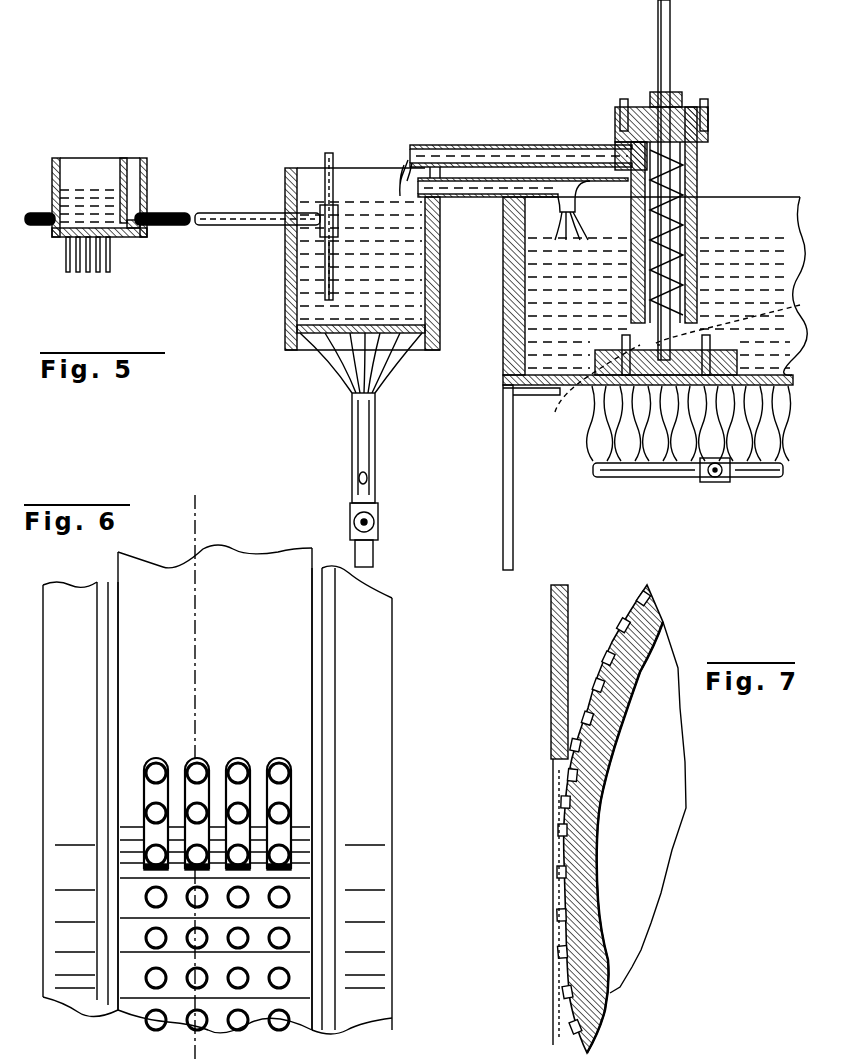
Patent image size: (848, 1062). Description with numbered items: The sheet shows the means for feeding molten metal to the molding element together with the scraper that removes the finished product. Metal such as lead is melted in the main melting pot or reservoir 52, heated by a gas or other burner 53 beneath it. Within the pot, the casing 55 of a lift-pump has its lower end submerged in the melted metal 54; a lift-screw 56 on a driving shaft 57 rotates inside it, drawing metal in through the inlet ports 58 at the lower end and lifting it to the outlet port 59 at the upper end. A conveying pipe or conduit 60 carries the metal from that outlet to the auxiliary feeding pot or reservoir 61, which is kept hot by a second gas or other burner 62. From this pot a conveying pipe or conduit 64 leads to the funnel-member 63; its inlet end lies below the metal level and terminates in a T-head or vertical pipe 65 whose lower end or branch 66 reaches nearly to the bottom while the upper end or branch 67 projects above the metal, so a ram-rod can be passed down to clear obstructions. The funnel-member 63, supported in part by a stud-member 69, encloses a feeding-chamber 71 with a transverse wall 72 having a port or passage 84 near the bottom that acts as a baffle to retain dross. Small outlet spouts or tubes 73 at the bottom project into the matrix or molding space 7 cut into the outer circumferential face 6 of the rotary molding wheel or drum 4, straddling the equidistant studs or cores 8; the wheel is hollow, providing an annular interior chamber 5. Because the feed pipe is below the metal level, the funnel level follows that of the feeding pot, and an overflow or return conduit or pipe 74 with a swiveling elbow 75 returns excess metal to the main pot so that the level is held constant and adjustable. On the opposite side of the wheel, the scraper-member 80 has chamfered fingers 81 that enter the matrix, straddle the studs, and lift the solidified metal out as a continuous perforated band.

In FIG. 6, the rotary molding wheel or drum 4 is at (392, 750).
In FIG. 7, the rotary molding wheel or drum 4 is at (645, 632).
In FIG. 7, the annular interior chamber 5 is at (627, 860).
In FIG. 6, the outer circumferential face 6 is at (58, 690).
In FIG. 7, the outer circumferential face 6 is at (553, 878).
In FIG. 6, the matrix or molding space 7 is at (420, 950).
In FIG. 7, the matrix or molding space 7 is at (606, 672).
In FIG. 6, the studs or cores 8 is at (272, 762).
In FIG. 7, the studs or cores 8 is at (558, 814).
In FIG. 6, the scraper-member 80 is at (215, 789).
In FIG. 7, the scraper-member 80 is at (552, 680).
In FIG. 6, the chamfered fingers 81 is at (240, 870).
In FIG. 7, the chamfered fingers 81 is at (558, 838).
In FIG. 5, the main melting pot or reservoir 52 is at (742, 207).
In FIG. 5, the gas or other burner 53 is at (668, 478).
In FIG. 5, the melted metal 54 is at (755, 248).
In FIG. 5, the pump-casing 55 is at (695, 172).
In FIG. 5, the lift-screw 56 is at (697, 228).
In FIG. 5, the driving shaft 57 is at (670, 55).
In FIG. 5, the inlet ports 58 is at (657, 437).
In FIG. 5, the outlet port 59 is at (617, 128).
In FIG. 5, the conveying pipe or conduit 60 is at (505, 145).
In FIG. 5, the auxiliary feeding pot or reservoir 61 is at (318, 345).
In FIG. 5, the gas or other burner 62 is at (378, 440).
In FIG. 5, the funnel-member 63 is at (55, 157).
In FIG. 5, the conveying pipe or conduit 64 is at (238, 212).
In FIG. 5, the T-head or vertical pipe 65 is at (338, 215).
In FIG. 5, the lower end or branch 66 is at (325, 270).
In FIG. 5, the upper end or branch 67 is at (336, 155).
In FIG. 5, the stud-member 69 is at (45, 212).
In FIG. 5, the feeding-chamber 71 is at (90, 168).
In FIG. 5, the transverse wall 72 is at (128, 172).
In FIG. 5, the outlet spouts or tubes 73 is at (108, 273).
In FIG. 5, the overflow or return conduit or pipe 74 is at (484, 198).
In FIG. 5, the elbow 75 is at (576, 190).
In FIG. 5, the port or passage 84 is at (135, 235).